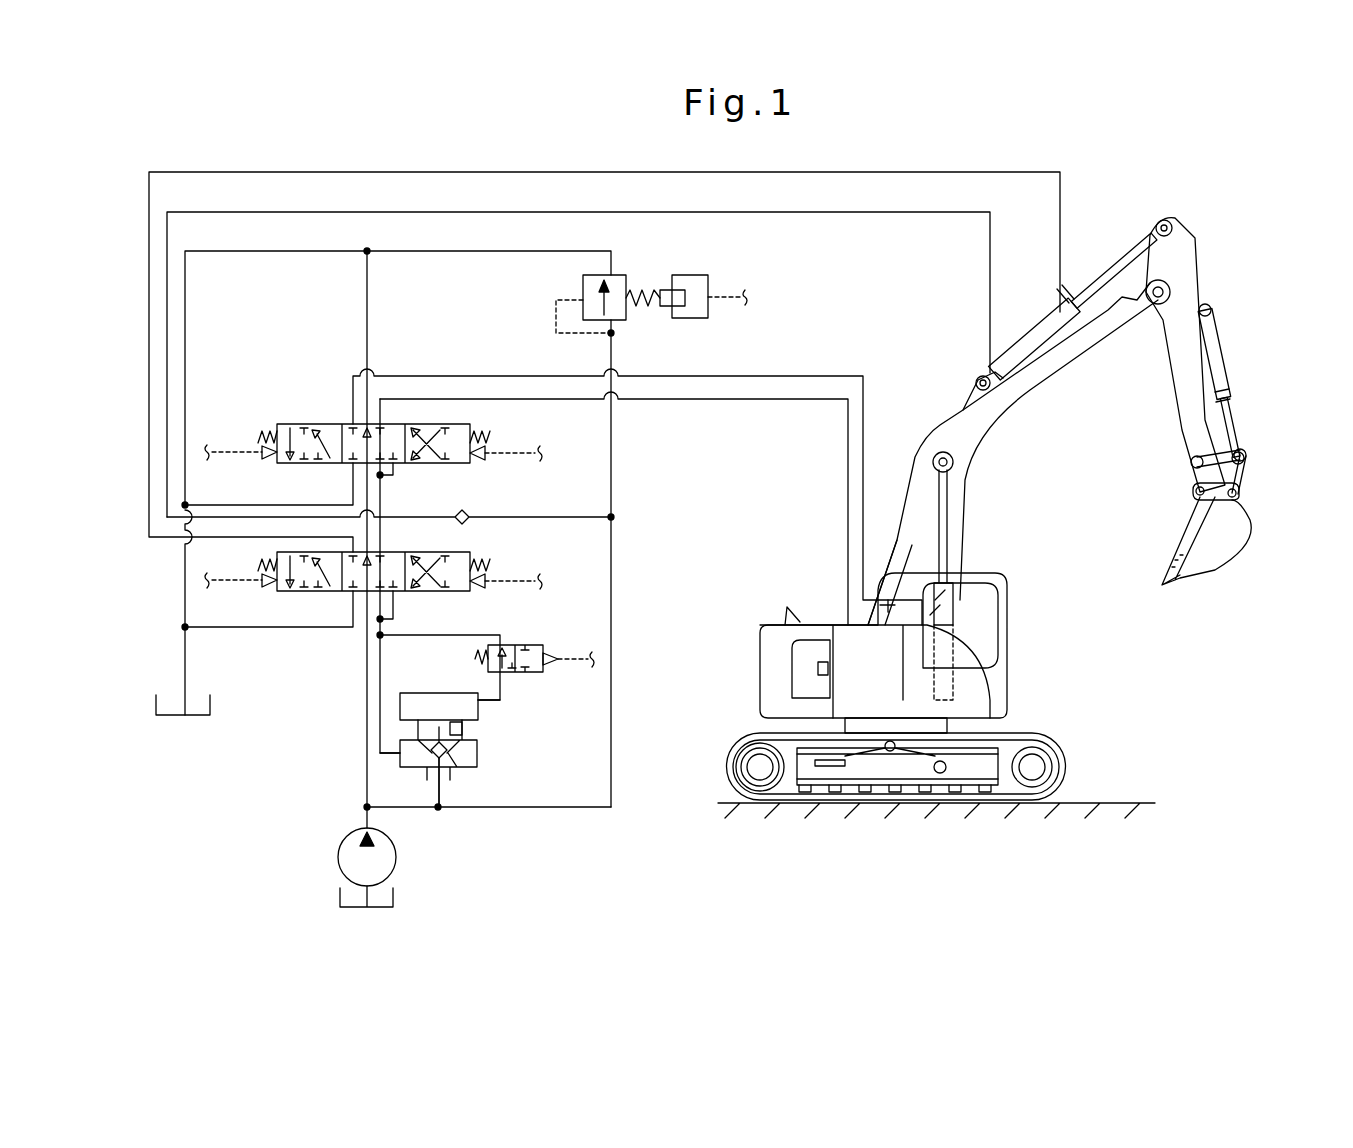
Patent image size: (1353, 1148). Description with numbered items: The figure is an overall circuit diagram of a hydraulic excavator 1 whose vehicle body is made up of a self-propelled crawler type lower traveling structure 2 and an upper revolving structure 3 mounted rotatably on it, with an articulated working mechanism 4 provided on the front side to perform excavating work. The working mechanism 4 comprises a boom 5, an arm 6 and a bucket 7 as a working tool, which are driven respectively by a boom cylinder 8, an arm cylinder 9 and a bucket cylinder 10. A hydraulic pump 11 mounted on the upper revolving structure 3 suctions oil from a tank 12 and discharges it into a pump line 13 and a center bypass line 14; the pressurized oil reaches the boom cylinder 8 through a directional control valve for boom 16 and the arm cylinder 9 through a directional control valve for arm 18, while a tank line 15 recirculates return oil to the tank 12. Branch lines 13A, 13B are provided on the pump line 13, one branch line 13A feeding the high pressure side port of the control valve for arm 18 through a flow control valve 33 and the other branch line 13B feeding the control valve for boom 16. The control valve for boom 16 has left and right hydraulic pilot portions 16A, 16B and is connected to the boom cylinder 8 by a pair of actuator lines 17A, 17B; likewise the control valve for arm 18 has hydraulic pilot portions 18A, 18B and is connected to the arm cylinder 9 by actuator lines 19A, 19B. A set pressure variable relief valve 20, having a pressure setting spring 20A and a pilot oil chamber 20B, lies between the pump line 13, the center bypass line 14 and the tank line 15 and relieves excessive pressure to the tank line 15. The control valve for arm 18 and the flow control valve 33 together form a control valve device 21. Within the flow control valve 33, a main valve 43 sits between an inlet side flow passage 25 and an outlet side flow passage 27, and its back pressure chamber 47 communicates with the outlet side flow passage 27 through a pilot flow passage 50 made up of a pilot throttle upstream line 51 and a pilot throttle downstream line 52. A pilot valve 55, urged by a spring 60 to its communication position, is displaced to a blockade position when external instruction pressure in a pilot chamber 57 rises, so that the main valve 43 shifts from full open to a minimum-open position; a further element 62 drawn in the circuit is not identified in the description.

The hydraulic excavator 1 is at (993, 500).
The lower traveling structure 2 is at (1065, 760).
The upper revolving structure 3 is at (968, 686).
The working mechanism 4 is at (1068, 441).
The boom 5 is at (1010, 425).
The arm 6 is at (1173, 375).
The bucket 7 is at (1218, 562).
The boom cylinder 8 is at (945, 620).
The arm cylinder 9 is at (1040, 330).
The bucket cylinder 10 is at (1225, 372).
The hydraulic pump 11 is at (340, 843).
The tank 12 is at (212, 705).
The pump line 13 is at (410, 808).
The branch line 13A is at (443, 808).
The branch line 13B is at (555, 517).
The center bypass line 14 is at (366, 660).
The tank line 15 is at (183, 625).
The directional control valve for boom 16 is at (380, 422).
The hydraulic pilot portion 16A is at (257, 452).
The hydraulic pilot portion 16B is at (490, 452).
The actuator line 17A is at (757, 400).
The actuator line 17B is at (762, 376).
The directional control valve for arm 18 is at (381, 573).
The hydraulic pilot portion 18A is at (257, 582).
The hydraulic pilot portion 18B is at (490, 576).
The actuator line 19A is at (988, 243).
The actuator line 19B is at (1062, 190).
The relief valve 20 is at (660, 366).
The pressure setting spring 20A is at (662, 310).
The pilot oil chamber 20B is at (696, 275).
The control valve device 21 is at (458, 678).
The inlet side flow passage 25 is at (432, 778).
The outlet side flow passage 27 is at (378, 708).
The flow control valve 33 is at (490, 746).
The main valve 43 is at (400, 748).
The back pressure chamber 47 is at (437, 693).
The pilot flow passage 50 is at (490, 715).
The pilot throttle upstream line 51 is at (505, 695).
The pilot throttle downstream line 52 is at (480, 635).
The pilot valve 55 is at (530, 645).
The pilot chamber 57 is at (553, 668).
The spring 60 is at (474, 657).
The check valve 62 is at (445, 760).